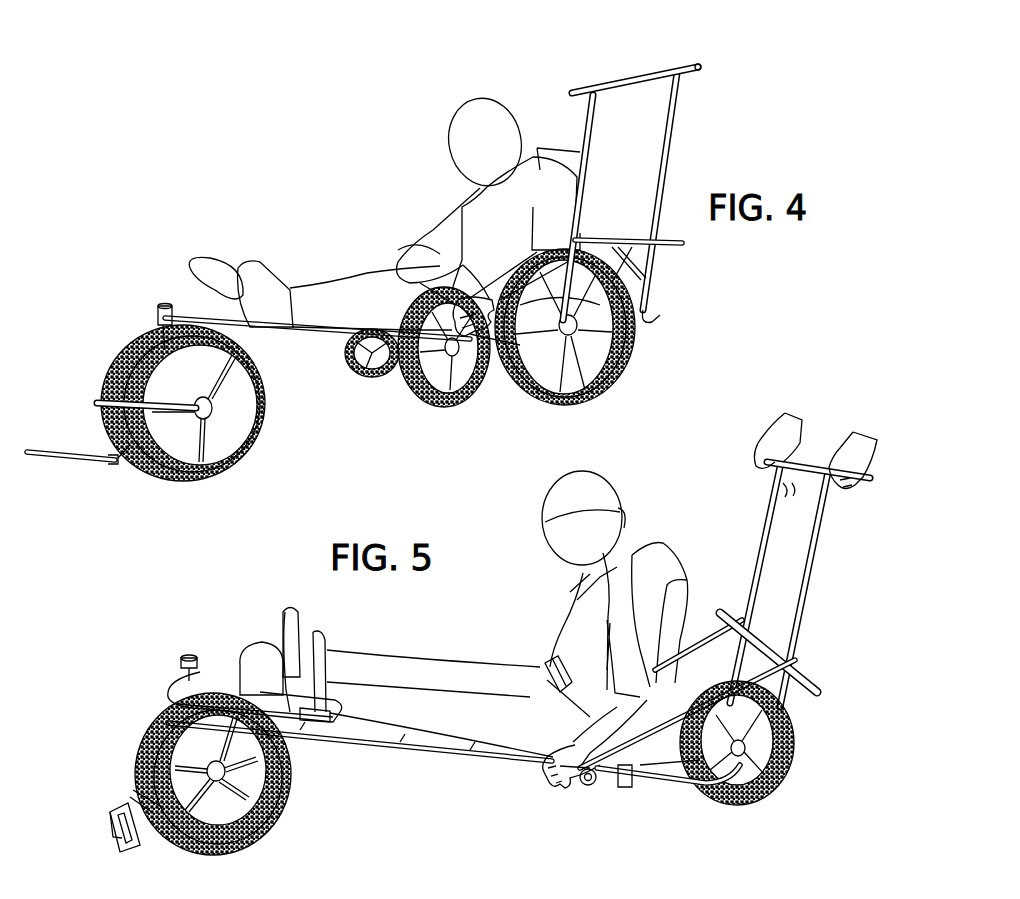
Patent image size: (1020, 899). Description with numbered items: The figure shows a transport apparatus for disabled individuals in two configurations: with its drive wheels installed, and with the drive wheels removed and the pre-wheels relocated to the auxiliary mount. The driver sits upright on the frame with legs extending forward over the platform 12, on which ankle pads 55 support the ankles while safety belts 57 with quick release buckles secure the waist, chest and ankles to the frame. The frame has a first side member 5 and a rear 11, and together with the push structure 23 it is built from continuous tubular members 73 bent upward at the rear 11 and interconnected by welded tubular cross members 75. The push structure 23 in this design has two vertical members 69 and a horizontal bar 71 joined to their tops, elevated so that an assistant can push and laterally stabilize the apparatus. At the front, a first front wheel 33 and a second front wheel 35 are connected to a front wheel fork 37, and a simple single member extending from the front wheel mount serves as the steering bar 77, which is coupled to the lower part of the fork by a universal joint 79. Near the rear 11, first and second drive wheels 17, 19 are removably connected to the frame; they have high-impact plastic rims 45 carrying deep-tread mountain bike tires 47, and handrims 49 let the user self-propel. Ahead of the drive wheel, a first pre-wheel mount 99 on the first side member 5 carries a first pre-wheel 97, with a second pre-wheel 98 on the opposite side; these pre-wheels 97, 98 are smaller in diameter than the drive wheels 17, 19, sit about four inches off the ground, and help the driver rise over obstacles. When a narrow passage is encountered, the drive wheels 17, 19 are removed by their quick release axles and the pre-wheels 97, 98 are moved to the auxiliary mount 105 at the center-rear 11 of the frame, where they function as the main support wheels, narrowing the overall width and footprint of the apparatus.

In FIG. 4, the first side member 5 is at (329, 342).
In FIG. 5, the first side member 5 is at (395, 741).
In FIG. 5, the rear 11 is at (688, 785).
In FIG. 5, the platform 12 is at (228, 648).
In FIG. 4, the first drive wheel 17 is at (616, 386).
In FIG. 4, the second drive wheel 19 is at (439, 222).
In FIG. 5, the push structure 23 is at (812, 608).
In FIG. 4, the first front wheel 33 is at (220, 466).
In FIG. 5, the first front wheel 33 is at (270, 817).
In FIG. 4, the second front wheel 35 is at (115, 356).
In FIG. 5, the second front wheel 35 is at (150, 737).
In FIG. 4, the front wheel fork 37 is at (158, 313).
In FIG. 4, the rims 45 is at (592, 398).
In FIG. 4, the deep-tread mountain bike tires 47 is at (420, 250).
In FIG. 4, the handrims 49 is at (516, 378).
In FIG. 5, the ankle pads 55 is at (318, 640).
In FIG. 5, the safety belts 57 is at (548, 662).
In FIG. 4, the vertical members 69 is at (596, 143).
In FIG. 5, the vertical members 69 is at (794, 500).
In FIG. 4, the horizontal bar 71 is at (660, 71).
In FIG. 5, the horizontal bar 71 is at (809, 463).
In FIG. 4, the continuous tubular members 73 is at (655, 322).
In FIG. 5, the continuous tubular members 73 is at (648, 782).
In FIG. 4, the tubular cross members 75 is at (643, 282).
In FIG. 5, the tubular cross members 75 is at (738, 615).
In FIG. 4, the steering bar 77 is at (92, 455).
In FIG. 4, the universal joint 79 is at (123, 463).
In FIG. 4, the first pre-wheel 97 is at (426, 396).
In FIG. 5, the first pre-wheel 97 is at (665, 790).
In FIG. 4, the second pre-wheel 98 is at (370, 379).
In FIG. 5, the second pre-wheel 98 is at (706, 690).
In FIG. 4, the first pre-wheel mount 99 is at (462, 394).
In FIG. 5, the first pre-wheel mount 99 is at (590, 785).
In FIG. 4, the auxiliary mount 105 is at (610, 240).
In FIG. 5, the auxiliary mount 105 is at (785, 700).